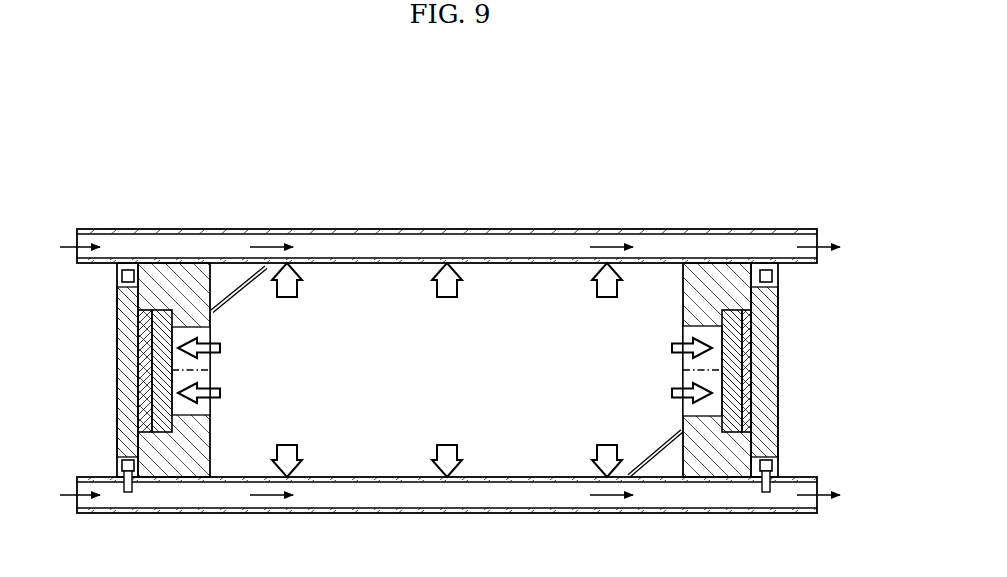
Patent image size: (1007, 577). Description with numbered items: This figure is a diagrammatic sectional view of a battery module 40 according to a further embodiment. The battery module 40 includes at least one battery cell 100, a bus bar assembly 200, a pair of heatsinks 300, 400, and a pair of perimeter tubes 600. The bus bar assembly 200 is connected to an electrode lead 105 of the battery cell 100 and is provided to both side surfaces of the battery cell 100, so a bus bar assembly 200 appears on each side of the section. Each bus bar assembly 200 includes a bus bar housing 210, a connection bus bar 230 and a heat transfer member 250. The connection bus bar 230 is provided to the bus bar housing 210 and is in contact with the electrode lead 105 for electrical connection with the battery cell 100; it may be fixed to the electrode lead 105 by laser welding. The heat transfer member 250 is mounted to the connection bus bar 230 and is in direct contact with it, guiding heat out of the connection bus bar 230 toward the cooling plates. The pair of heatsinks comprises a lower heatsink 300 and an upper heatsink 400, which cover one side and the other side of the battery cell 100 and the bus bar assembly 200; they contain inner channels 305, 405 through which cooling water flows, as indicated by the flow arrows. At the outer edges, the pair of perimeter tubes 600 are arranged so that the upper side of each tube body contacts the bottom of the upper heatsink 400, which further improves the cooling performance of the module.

The battery module 40 is at (99, 134).
The battery cell 100 is at (577, 295).
The electrode lead 105 is at (198, 330).
The bus bar assembly 200 is at (174, 370).
The bus bar housing 210 is at (735, 285).
The connection bus bar 230 is at (740, 380).
The heat transfer member 250 is at (748, 348).
The lower heatsink 300 is at (415, 514).
The inner channel 305 is at (493, 498).
The upper heatsink 400 is at (412, 232).
The inner channel 405 is at (493, 248).
The perimeter tube 600 is at (116, 290).